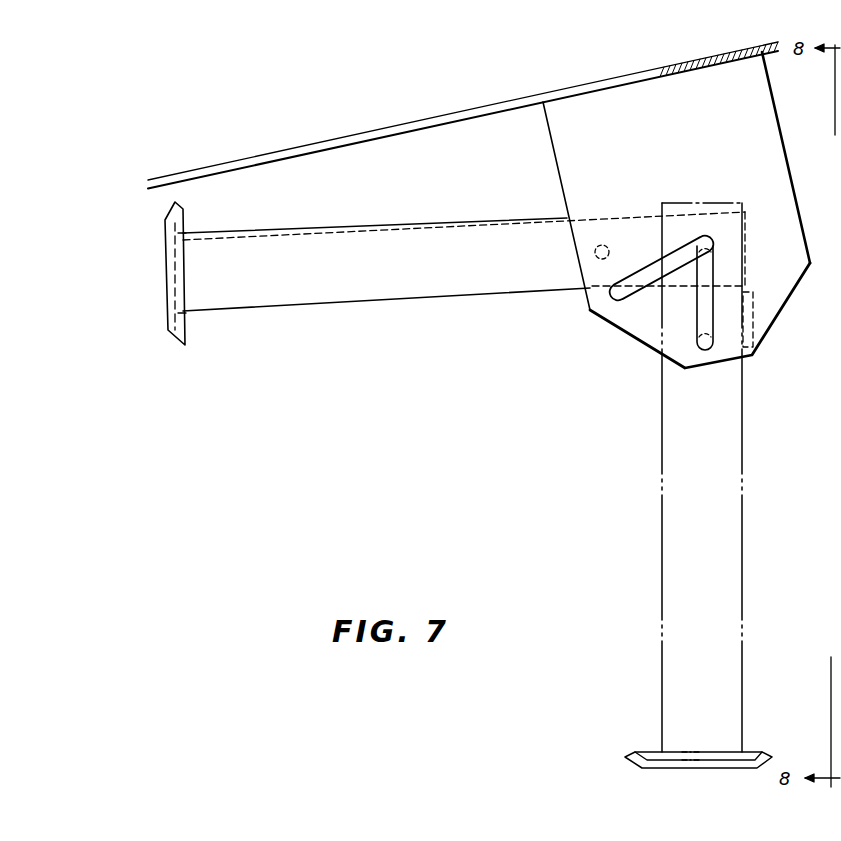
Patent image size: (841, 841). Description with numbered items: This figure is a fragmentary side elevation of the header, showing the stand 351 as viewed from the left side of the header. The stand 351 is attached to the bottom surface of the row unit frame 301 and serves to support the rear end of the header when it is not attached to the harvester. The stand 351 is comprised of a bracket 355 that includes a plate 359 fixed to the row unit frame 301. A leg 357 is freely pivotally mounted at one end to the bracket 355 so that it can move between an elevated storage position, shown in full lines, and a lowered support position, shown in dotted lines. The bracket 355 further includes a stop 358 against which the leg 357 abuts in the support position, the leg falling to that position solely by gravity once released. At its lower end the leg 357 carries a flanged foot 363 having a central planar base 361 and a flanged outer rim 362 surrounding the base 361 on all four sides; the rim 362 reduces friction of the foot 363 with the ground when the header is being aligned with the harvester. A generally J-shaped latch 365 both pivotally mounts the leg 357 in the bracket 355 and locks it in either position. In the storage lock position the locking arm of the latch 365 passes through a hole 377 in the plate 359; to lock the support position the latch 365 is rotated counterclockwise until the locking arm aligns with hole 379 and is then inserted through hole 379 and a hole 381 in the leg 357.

The row unit frame 301 is at (376, 131).
The stand 351 is at (433, 396).
The bracket 355 is at (533, 167).
The leg 357 is at (467, 293).
The stop 358 is at (757, 336).
The plate 359 is at (685, 138).
The central planar base 361 is at (167, 318).
The flanged outer rim 362 is at (187, 334).
The flanged foot 363 is at (186, 216).
The latch 365 is at (651, 328).
The hole 377 is at (614, 301).
The hole 379 is at (707, 351).
The hole 381 is at (606, 246).